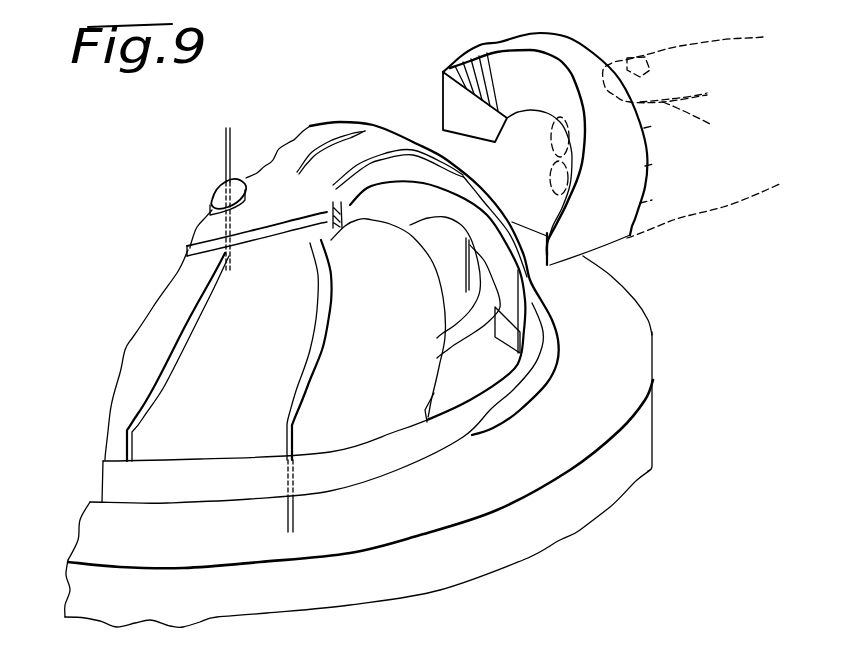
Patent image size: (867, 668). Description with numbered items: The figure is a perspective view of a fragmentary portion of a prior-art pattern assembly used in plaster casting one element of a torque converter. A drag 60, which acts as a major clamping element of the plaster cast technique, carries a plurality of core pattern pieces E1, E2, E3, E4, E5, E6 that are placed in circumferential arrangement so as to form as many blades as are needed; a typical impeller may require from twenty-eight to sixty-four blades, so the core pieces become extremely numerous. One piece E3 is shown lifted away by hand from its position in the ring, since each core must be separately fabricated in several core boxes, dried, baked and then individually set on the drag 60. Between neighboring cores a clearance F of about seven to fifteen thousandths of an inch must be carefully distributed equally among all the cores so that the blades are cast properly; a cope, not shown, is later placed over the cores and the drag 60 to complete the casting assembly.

The drag 60 is at (540, 473).
The core pattern piece E1 is at (247, 365).
The core pattern piece E2 is at (382, 343).
The core pattern piece E3 is at (602, 207).
The core pattern piece E4 is at (404, 214).
The core pattern piece E5 is at (378, 135).
The core pattern piece E6 is at (310, 123).
The clearance F is at (233, 137).